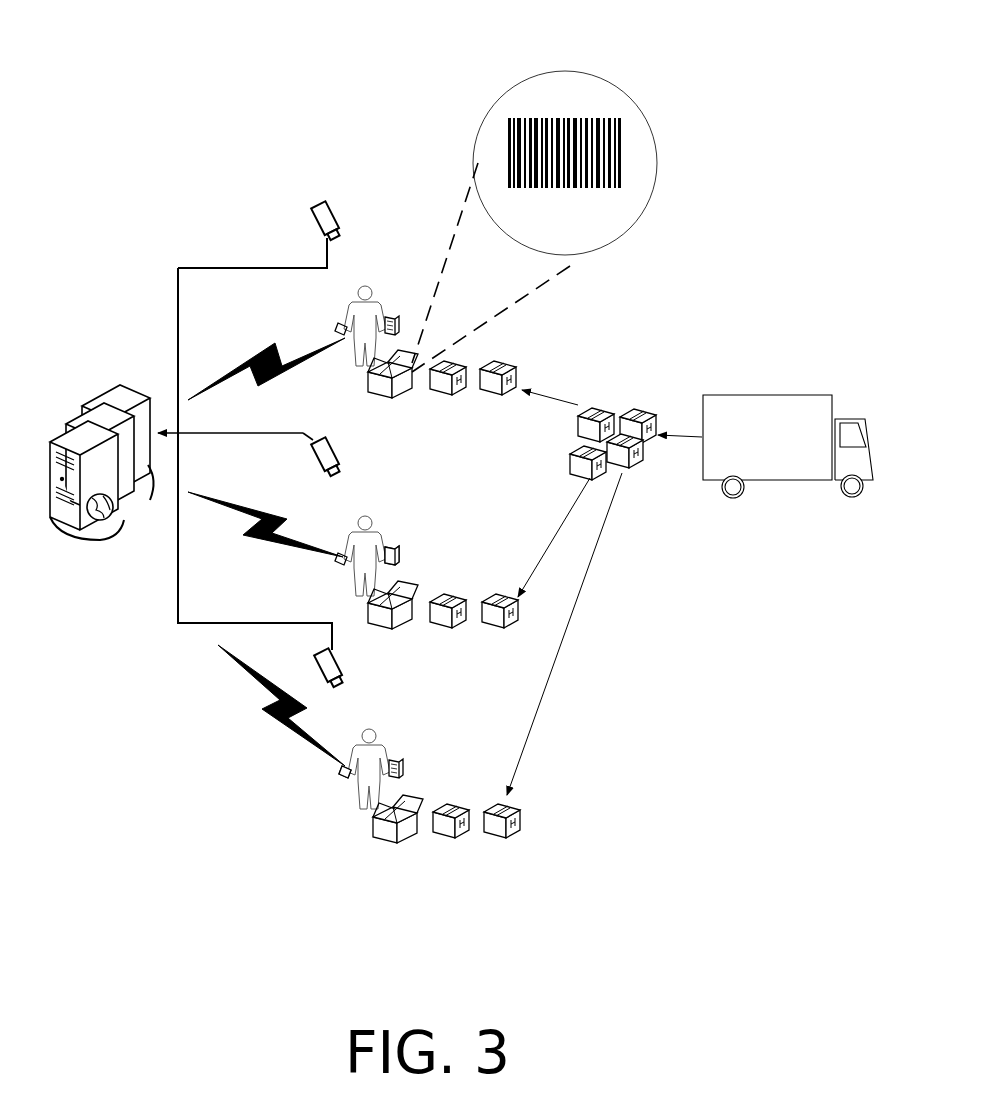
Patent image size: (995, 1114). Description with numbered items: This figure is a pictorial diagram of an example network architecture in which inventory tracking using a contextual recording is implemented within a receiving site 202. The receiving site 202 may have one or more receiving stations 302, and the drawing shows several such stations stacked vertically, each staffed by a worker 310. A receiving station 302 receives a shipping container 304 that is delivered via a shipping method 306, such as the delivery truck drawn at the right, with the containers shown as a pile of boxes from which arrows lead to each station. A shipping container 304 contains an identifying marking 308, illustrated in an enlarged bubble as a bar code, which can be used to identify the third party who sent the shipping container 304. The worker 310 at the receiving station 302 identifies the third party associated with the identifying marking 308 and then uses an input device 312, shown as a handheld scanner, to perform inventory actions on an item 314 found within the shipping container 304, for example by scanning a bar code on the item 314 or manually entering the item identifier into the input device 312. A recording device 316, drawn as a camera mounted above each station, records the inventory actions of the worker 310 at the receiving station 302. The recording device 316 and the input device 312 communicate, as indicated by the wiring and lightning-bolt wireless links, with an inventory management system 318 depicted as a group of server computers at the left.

The receiving site 202 is at (668, 743).
The receiving station 302 is at (429, 771).
The shipping container 304 is at (637, 405).
The shipping method 306 is at (765, 397).
The identifying marking 308 is at (565, 72).
The worker 310 is at (363, 515).
The input device 312 is at (350, 777).
The item 314 is at (387, 548).
The recording device 316 is at (340, 462).
The inventory management system 318 is at (95, 414).